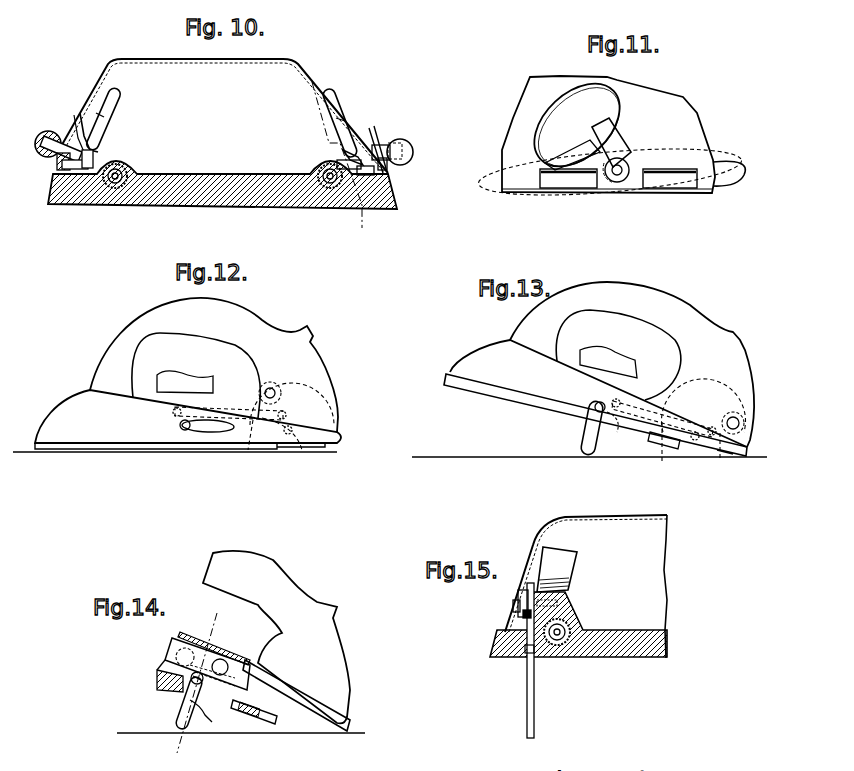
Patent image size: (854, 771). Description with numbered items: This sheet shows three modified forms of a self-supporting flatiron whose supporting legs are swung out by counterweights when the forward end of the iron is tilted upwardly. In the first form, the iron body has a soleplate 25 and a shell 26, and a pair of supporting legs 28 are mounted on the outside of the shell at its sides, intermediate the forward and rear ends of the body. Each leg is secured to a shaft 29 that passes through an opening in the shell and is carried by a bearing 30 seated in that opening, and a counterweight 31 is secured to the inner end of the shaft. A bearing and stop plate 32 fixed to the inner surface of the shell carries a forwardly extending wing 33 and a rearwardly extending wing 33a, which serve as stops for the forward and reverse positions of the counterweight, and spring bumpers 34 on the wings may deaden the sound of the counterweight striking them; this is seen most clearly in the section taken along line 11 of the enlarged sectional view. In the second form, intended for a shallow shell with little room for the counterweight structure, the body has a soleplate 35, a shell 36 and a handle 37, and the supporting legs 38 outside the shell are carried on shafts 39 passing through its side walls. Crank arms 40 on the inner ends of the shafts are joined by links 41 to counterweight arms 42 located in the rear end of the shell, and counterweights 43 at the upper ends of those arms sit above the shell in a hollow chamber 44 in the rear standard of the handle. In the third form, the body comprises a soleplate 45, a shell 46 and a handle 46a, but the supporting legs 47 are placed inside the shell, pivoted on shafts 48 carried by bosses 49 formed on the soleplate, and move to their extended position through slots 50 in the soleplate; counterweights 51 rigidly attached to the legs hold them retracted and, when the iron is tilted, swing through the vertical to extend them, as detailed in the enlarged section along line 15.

In FIG. 10, the section line 11 is at (311, 82).
In FIG. 14, the section line 15 is at (195, 608).
In FIG. 10, the soleplate 25 is at (134, 206).
In FIG. 10, the shell 26 is at (297, 62).
In FIG. 11, the shell 26 is at (520, 190).
In FIG. 10, the supporting legs 28 is at (40, 156).
In FIG. 11, the supporting legs 28 is at (722, 160).
In FIG. 10, the shafts 29 is at (45, 134).
In FIG. 11, the shafts 29 is at (610, 178).
In FIG. 10, the bearings 30 is at (62, 170).
In FIG. 11, the bearings 30 is at (617, 184).
In FIG. 10, the counterweights 31 is at (121, 98).
In FIG. 11, the counterweights 31 is at (606, 115).
In FIG. 10, the bearing and stop plate 32 is at (80, 115).
In FIG. 11, the bearing and stop plate 32 is at (621, 160).
In FIG. 10, the forwardly extending wing 33 is at (90, 166).
In FIG. 11, the forwardly extending wing 33 is at (563, 188).
In FIG. 10, the rearwardly extending wing 33a is at (342, 165).
In FIG. 11, the rearwardly extending wing 33a is at (668, 182).
In FIG. 10, the spring bumpers 34 is at (350, 160).
In FIG. 11, the spring bumpers 34 is at (540, 172).
In FIG. 12, the soleplate 35 is at (80, 444).
In FIG. 13, the soleplate 35 is at (476, 388).
In FIG. 12, the shell 36 is at (60, 405).
In FIG. 13, the shell 36 is at (468, 362).
In FIG. 12, the handle 37 is at (262, 321).
In FIG. 13, the handle 37 is at (690, 318).
In FIG. 12, the supporting legs 38 is at (213, 432).
In FIG. 13, the supporting legs 38 is at (585, 434).
In FIG. 12, the shafts 39 is at (182, 432).
In FIG. 13, the shafts 39 is at (598, 404).
In FIG. 12, the crank arms 40 is at (178, 418).
In FIG. 13, the crank arms 40 is at (613, 426).
In FIG. 12, the links 41 is at (247, 448).
In FIG. 13, the links 41 is at (655, 451).
In FIG. 12, the counterweight arms 42 is at (302, 450).
In FIG. 13, the counterweight arms 42 is at (715, 457).
In FIG. 12, the counterweights 43 is at (273, 384).
In FIG. 13, the counterweights 43 is at (745, 425).
In FIG. 12, the hollow chamber 44 is at (335, 395).
In FIG. 13, the hollow chamber 44 is at (741, 407).
In FIG. 14, the soleplate 45 is at (165, 690).
In FIG. 15, the soleplate 45 is at (616, 658).
In FIG. 14, the shell 46 is at (302, 727).
In FIG. 15, the shell 46 is at (545, 522).
In FIG. 14, the handle 46a is at (270, 573).
In FIG. 14, the supporting legs 47 is at (200, 716).
In FIG. 15, the supporting legs 47 is at (526, 708).
In FIG. 14, the shafts 48 is at (184, 701).
In FIG. 15, the shafts 48 is at (518, 608).
In FIG. 14, the bosses 49 is at (200, 668).
In FIG. 15, the bosses 49 is at (566, 612).
In FIG. 14, the slots 50 is at (243, 716).
In FIG. 15, the slots 50 is at (527, 652).
In FIG. 14, the counterweights 51 is at (222, 645).
In FIG. 15, the counterweights 51 is at (566, 560).